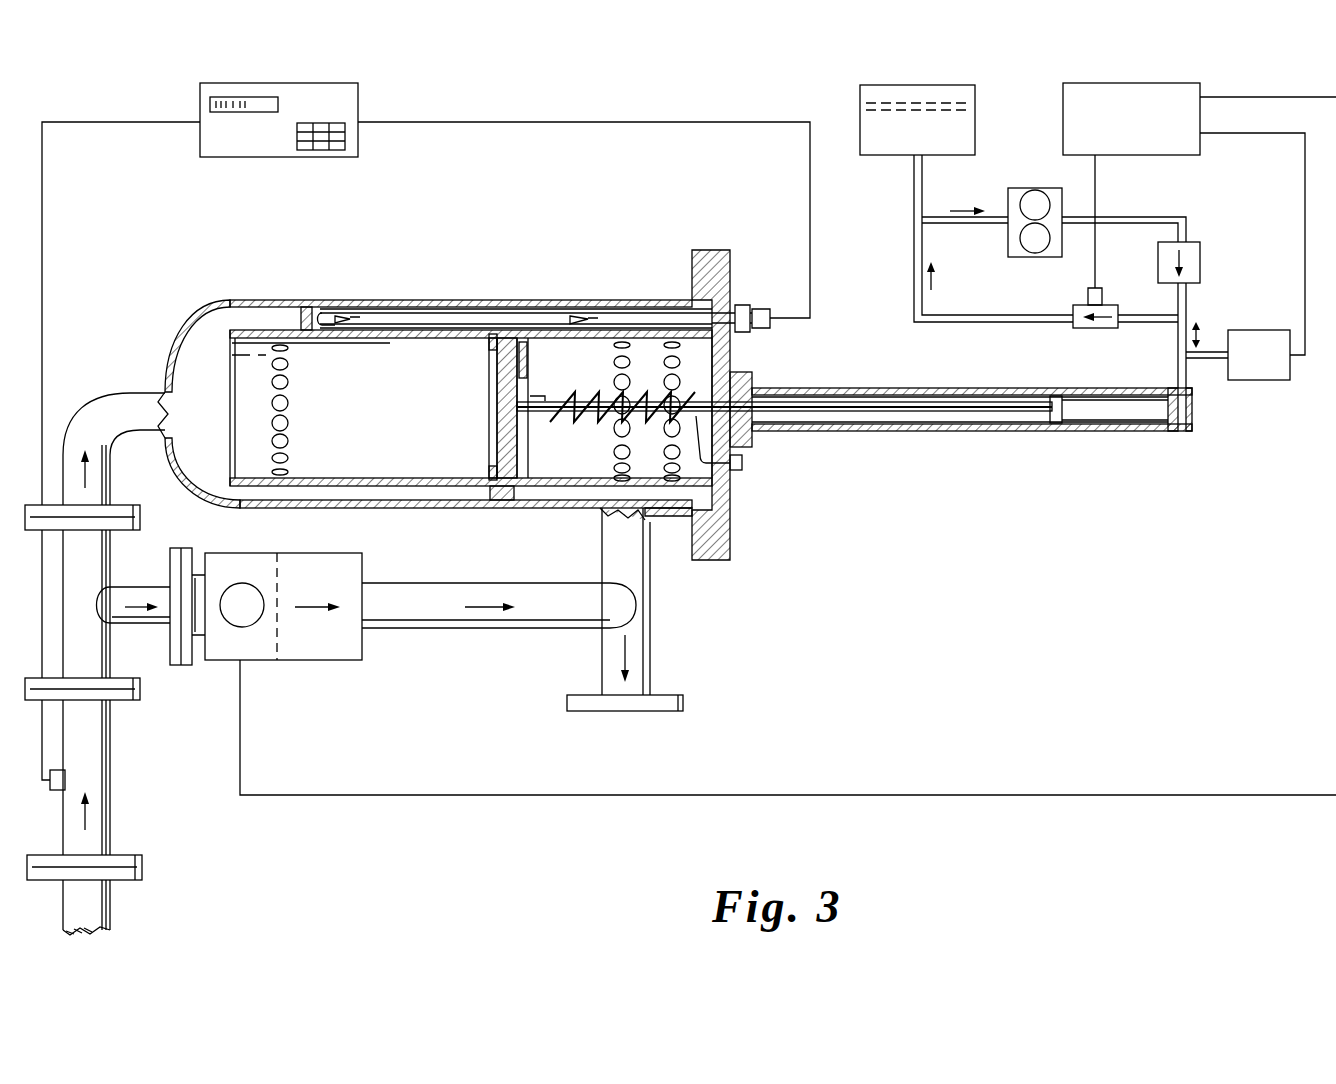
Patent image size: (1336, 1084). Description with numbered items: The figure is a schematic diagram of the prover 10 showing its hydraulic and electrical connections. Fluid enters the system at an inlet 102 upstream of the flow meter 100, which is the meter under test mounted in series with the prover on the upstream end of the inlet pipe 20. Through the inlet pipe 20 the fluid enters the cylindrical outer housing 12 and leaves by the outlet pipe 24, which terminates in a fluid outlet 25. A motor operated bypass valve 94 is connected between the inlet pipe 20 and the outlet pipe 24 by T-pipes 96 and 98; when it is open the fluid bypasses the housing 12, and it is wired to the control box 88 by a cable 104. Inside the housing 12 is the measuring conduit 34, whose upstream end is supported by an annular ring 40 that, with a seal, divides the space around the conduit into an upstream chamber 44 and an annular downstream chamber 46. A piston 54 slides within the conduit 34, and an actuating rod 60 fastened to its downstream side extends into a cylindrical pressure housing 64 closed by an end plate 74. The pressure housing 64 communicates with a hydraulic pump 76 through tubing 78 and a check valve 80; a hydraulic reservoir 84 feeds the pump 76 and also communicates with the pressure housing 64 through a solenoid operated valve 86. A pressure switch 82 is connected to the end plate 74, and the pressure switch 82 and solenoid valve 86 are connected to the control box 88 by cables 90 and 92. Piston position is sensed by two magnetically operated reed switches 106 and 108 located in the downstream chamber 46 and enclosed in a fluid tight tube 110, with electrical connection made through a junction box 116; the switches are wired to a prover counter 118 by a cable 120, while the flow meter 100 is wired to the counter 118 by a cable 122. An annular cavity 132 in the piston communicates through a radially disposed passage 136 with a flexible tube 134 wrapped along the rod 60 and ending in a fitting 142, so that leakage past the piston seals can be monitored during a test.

The prover 10 is at (988, 578).
The outer housing 12 is at (400, 302).
The inlet pipe 20 is at (98, 404).
The outlet pipe 24 is at (652, 622).
The fluid outlet 25 is at (636, 712).
The measuring conduit 34 is at (432, 332).
The annular ring 40 is at (302, 322).
The upstream chamber 44 is at (200, 360).
The annular downstream chamber 46 is at (444, 497).
The piston 54 is at (490, 404).
The actuating rod 60 is at (913, 412).
The pressure housing 64 is at (1086, 432).
The end plate 74 is at (1194, 420).
The hydraulic pump 76 is at (1035, 190).
The tubing 78 is at (1178, 340).
The check valve 80 is at (1200, 260).
The pressure switch 82 is at (1238, 334).
The hydraulic reservoir 84 is at (860, 103).
The solenoid operated valve 86 is at (1076, 308).
The control box 88 is at (1064, 106).
The cable 90 is at (1214, 138).
The cable 92 is at (1097, 198).
The motor operated bypass valve 94 is at (286, 660).
The T-pipe 96 is at (124, 584).
The T-pipe 98 is at (512, 628).
The flow meter 100 is at (112, 795).
The inlet 102 is at (92, 934).
The cable 104 is at (1264, 114).
The reed switch 106 is at (368, 297).
The reed switch 108 is at (584, 318).
The fluid tight tube 110 is at (476, 314).
The junction box 116 is at (768, 297).
The prover counter 118 is at (360, 108).
The cable 120 is at (543, 121).
The cable 122 is at (42, 220).
The annular cavity 132 is at (503, 490).
The flexible tube 134 is at (603, 425).
The radially disposed passage 136 is at (502, 376).
The fitting 142 is at (743, 464).